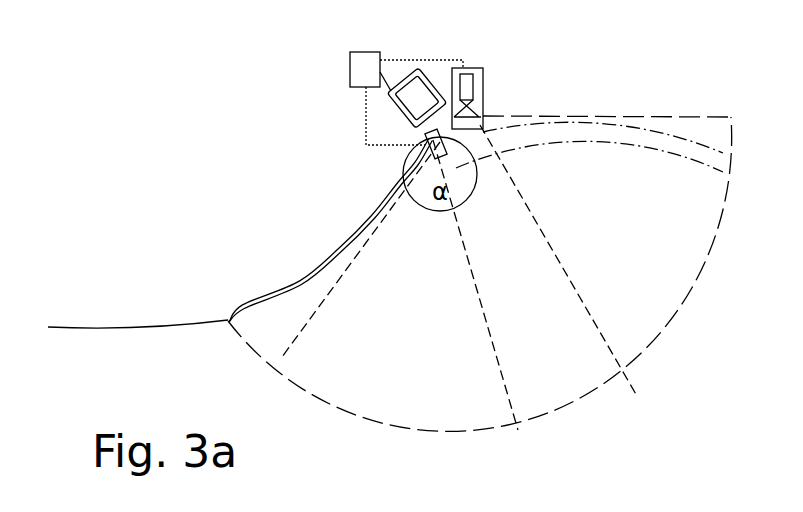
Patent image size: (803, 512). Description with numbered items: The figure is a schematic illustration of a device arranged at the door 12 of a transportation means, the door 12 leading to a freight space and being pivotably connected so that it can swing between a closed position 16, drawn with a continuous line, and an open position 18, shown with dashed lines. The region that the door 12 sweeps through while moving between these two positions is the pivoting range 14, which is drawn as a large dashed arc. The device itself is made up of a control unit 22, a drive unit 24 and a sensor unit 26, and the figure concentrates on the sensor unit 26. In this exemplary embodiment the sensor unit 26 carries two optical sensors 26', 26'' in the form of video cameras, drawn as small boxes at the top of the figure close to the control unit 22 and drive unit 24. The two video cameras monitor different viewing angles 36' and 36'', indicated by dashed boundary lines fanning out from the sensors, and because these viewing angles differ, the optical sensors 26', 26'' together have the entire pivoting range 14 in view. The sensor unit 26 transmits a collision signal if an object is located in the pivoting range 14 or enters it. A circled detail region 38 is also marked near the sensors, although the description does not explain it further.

The door 12 is at (262, 297).
The pivoting range 14 is at (603, 385).
The closed position 16 is at (327, 255).
The open position 18 is at (719, 175).
The control unit 22 is at (350, 73).
The drive unit 24 is at (427, 152).
The sensor unit 26 is at (475, 81).
The optical sensor 26' is at (483, 72).
The optical sensor 26'' is at (422, 73).
The viewing angle 36' is at (598, 260).
The viewing angle 36'' is at (609, 72).
The detection region 38 is at (437, 211).